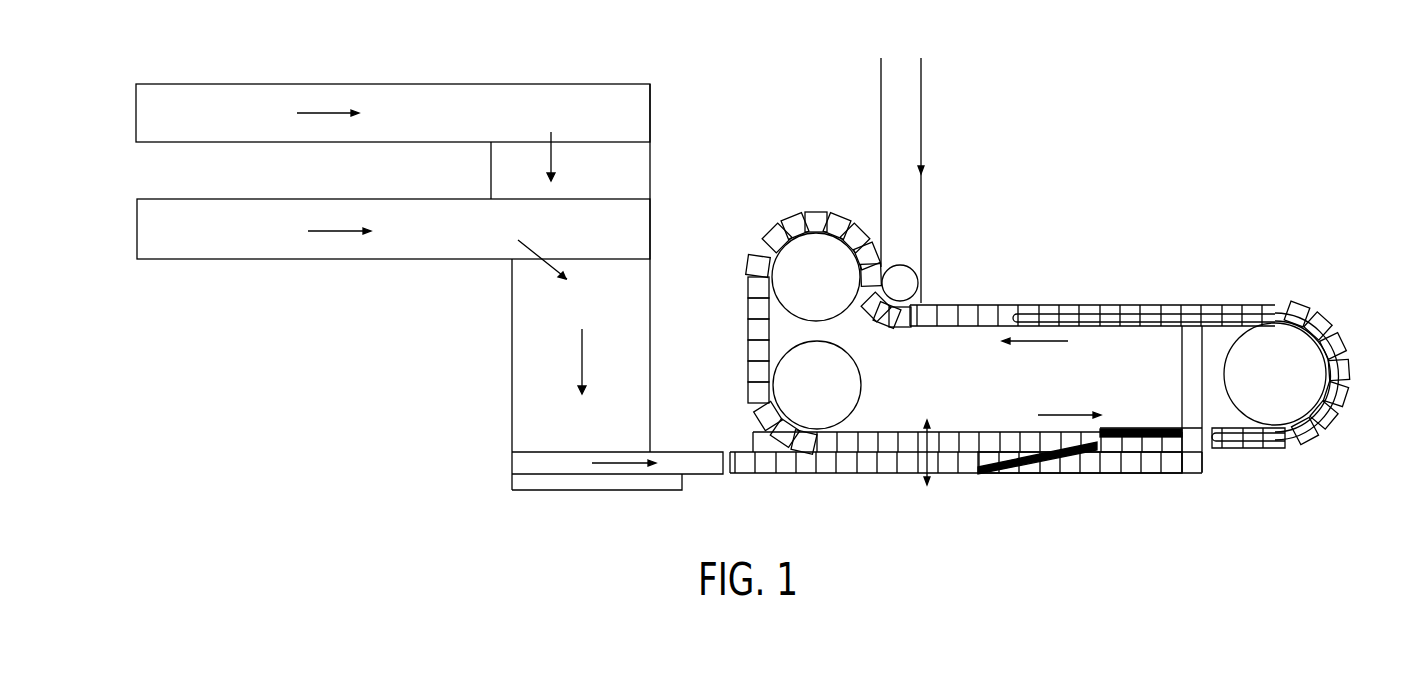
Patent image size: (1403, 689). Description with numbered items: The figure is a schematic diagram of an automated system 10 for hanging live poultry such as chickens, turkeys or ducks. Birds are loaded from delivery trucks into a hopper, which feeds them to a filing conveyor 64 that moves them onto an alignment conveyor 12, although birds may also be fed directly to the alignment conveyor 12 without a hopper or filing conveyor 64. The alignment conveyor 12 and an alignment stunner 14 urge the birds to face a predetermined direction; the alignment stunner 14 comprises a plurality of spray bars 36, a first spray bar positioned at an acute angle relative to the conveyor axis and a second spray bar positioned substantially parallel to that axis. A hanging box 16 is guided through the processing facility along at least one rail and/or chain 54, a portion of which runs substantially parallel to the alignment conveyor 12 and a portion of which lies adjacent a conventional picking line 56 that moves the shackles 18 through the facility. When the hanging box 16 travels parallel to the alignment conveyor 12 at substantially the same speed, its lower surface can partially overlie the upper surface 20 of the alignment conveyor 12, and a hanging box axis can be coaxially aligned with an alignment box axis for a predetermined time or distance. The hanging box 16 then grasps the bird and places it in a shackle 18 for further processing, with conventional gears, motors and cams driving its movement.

The system for hanging live poultry 10 is at (1111, 130).
The alignment conveyor 12 is at (786, 464).
The alignment stunner 14 is at (1047, 457).
The hanging box 16 is at (748, 307).
The shackle 18 is at (921, 220).
The upper surface of the alignment conveyor 20 is at (868, 462).
The spray bars 36 is at (1008, 457).
The rail and/or chain 54 is at (937, 328).
The picking line 56 is at (921, 95).
The filing conveyor 64 is at (322, 130).